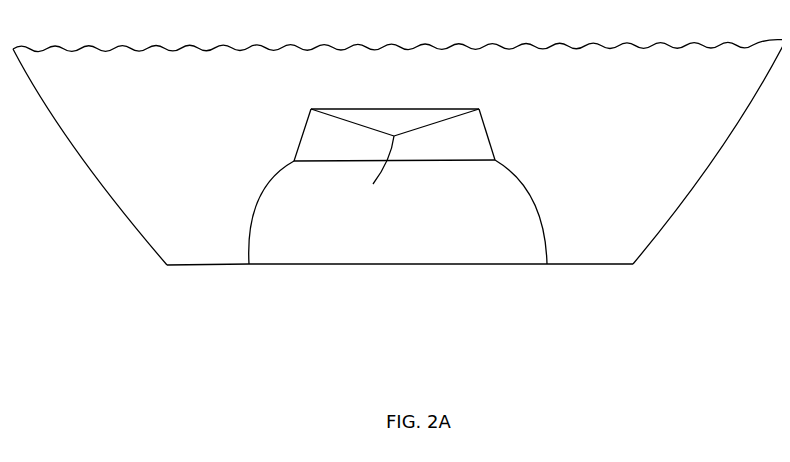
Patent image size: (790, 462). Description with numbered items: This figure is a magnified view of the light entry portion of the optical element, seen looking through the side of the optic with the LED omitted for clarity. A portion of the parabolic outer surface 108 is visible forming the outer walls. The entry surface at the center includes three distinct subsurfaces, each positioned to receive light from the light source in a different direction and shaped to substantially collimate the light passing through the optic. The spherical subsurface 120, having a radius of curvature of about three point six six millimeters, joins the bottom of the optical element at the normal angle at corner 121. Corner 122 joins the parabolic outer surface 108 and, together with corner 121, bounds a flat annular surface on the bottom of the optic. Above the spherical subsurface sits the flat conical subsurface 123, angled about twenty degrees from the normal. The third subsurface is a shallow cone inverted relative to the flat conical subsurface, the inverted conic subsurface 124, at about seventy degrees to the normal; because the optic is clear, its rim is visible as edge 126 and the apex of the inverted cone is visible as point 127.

The parabolic outer surface 108 is at (94, 177).
The spherical subsurface 120 is at (519, 200).
The corner 121 is at (241, 256).
The corner 122 is at (159, 257).
The flat conical subsurface 123 is at (478, 124).
The inverted conic subsurface 124 is at (339, 112).
The edge 126 is at (387, 101).
The point 127 is at (372, 173).